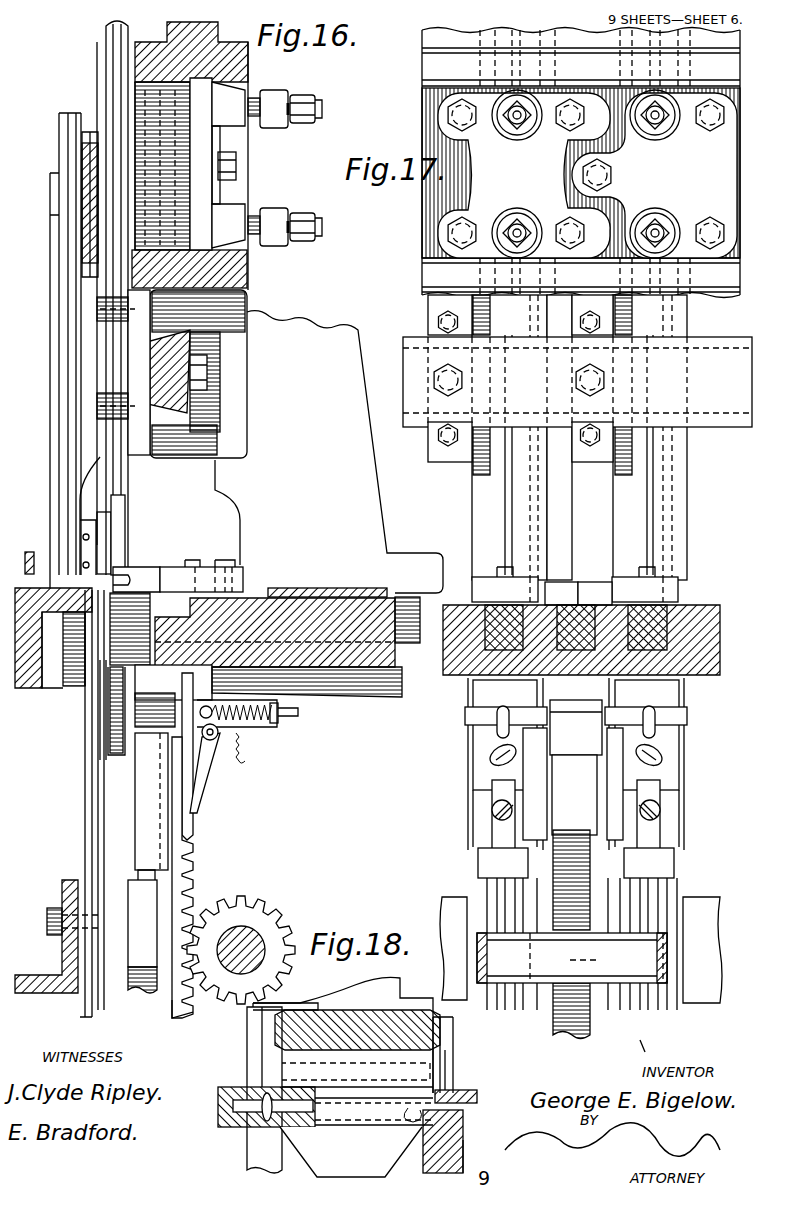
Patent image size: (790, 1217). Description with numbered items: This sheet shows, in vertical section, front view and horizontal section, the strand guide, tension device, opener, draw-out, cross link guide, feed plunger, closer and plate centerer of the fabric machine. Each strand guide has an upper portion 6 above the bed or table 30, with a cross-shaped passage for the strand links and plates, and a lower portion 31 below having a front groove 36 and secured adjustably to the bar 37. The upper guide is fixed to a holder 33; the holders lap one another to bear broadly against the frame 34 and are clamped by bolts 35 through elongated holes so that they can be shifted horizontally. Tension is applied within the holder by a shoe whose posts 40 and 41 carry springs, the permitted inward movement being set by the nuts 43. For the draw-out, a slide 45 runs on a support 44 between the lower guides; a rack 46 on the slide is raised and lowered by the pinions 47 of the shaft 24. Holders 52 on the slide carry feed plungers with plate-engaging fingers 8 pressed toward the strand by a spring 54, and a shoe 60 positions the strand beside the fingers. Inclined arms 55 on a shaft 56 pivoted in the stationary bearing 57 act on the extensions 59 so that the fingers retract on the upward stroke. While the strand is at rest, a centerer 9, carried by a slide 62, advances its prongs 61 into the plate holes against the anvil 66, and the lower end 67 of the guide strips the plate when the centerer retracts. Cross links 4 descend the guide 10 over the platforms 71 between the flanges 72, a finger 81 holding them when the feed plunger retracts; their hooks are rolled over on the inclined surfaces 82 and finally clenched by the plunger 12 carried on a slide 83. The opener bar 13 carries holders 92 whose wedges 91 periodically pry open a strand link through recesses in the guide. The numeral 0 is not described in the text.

In FIG. 16, the plate 0 is at (86, 130).
In FIG. 18, the cross link 4 is at (397, 1015).
In FIG. 16, the upper portion of strand guide 6 is at (115, 33).
In FIG. 17, the upper portion of strand guide 6 is at (480, 510).
In FIG. 18, the upper portion of strand guide 6 is at (222, 1112).
In FIG. 16, the plate-engaging finger 8 is at (104, 707).
In FIG. 16, the centerer 9 is at (125, 575).
In FIG. 17, the centerer 9 is at (483, 583).
In FIG. 18, the centerer 9 is at (252, 1150).
In FIG. 16, the cross link guide 10 is at (52, 370).
In FIG. 18, the cross link guide 10 is at (350, 1022).
In FIG. 16, the clenching plunger 12 is at (150, 577).
In FIG. 17, the clenching plunger 12 is at (585, 582).
In FIG. 18, the clenching plunger 12 is at (351, 1152).
In FIG. 16, the opener bar 13 is at (194, 342).
In FIG. 17, the opener bar 13 is at (410, 340).
In FIG. 16, the shaft 24 is at (242, 928).
In FIG. 17, the shaft 24 is at (653, 950).
In FIG. 17, the bed or table 30 is at (458, 655).
In FIG. 16, the lower portion of strand guide 31 is at (27, 557).
In FIG. 17, the lower portion of strand guide 31 is at (470, 873).
In FIG. 16, the holder 33 is at (197, 137).
In FIG. 17, the holder 33 is at (468, 140).
In FIG. 16, the frame 34 is at (238, 62).
In FIG. 17, the frame 34 is at (727, 78).
In FIG. 16, the bolt 35 is at (236, 176).
In FIG. 17, the bolt 35 is at (583, 175).
In FIG. 17, the groove 36 is at (630, 1050).
In FIG. 16, the bar 37 is at (62, 900).
In FIG. 17, the bar 37 is at (702, 897).
In FIG. 16, the post 40 is at (322, 108).
In FIG. 17, the post 40 is at (519, 113).
In FIG. 16, the post 41 is at (320, 228).
In FIG. 17, the post 41 is at (522, 253).
In FIG. 16, the nut 43 is at (293, 120).
In FIG. 16, the support 44 is at (143, 995).
In FIG. 16, the slide 45 is at (174, 873).
In FIG. 16, the rack 46 is at (183, 1023).
In FIG. 17, the rack 46 is at (563, 858).
In FIG. 16, the pinion 47 is at (268, 933).
In FIG. 17, the pinion 47 is at (575, 993).
In FIG. 16, the holder 52 is at (189, 813).
In FIG. 16, the spring 54 is at (278, 718).
In FIG. 16, the inclined arm or guide 55 is at (203, 768).
In FIG. 17, the inclined arm or guide 55 is at (617, 793).
In FIG. 17, the shaft 56 is at (607, 735).
In FIG. 17, the stationary bearing 57 is at (576, 727).
In FIG. 17, the extension 59 is at (506, 778).
In FIG. 16, the shoe 60 is at (113, 733).
In FIG. 18, the prong 61 is at (458, 1141).
In FIG. 16, the slide 62 is at (295, 587).
In FIG. 17, the slide 62 is at (550, 600).
In FIG. 16, the anvil 66 is at (106, 545).
In FIG. 18, the anvil 66 is at (478, 1098).
In FIG. 16, the lower end of strand guide 67 is at (120, 533).
In FIG. 18, the platform 71 is at (440, 1070).
In FIG. 18, the vertical flange 72 is at (447, 1043).
In FIG. 18, the finger 81 is at (290, 1005).
In FIG. 18, the inclined surface 82 is at (463, 1142).
In FIG. 17, the slide 83 is at (582, 600).
In FIG. 17, the wedge 91 is at (487, 320).
In FIG. 16, the holder 92 is at (124, 372).
In FIG. 17, the holder 92 is at (437, 457).